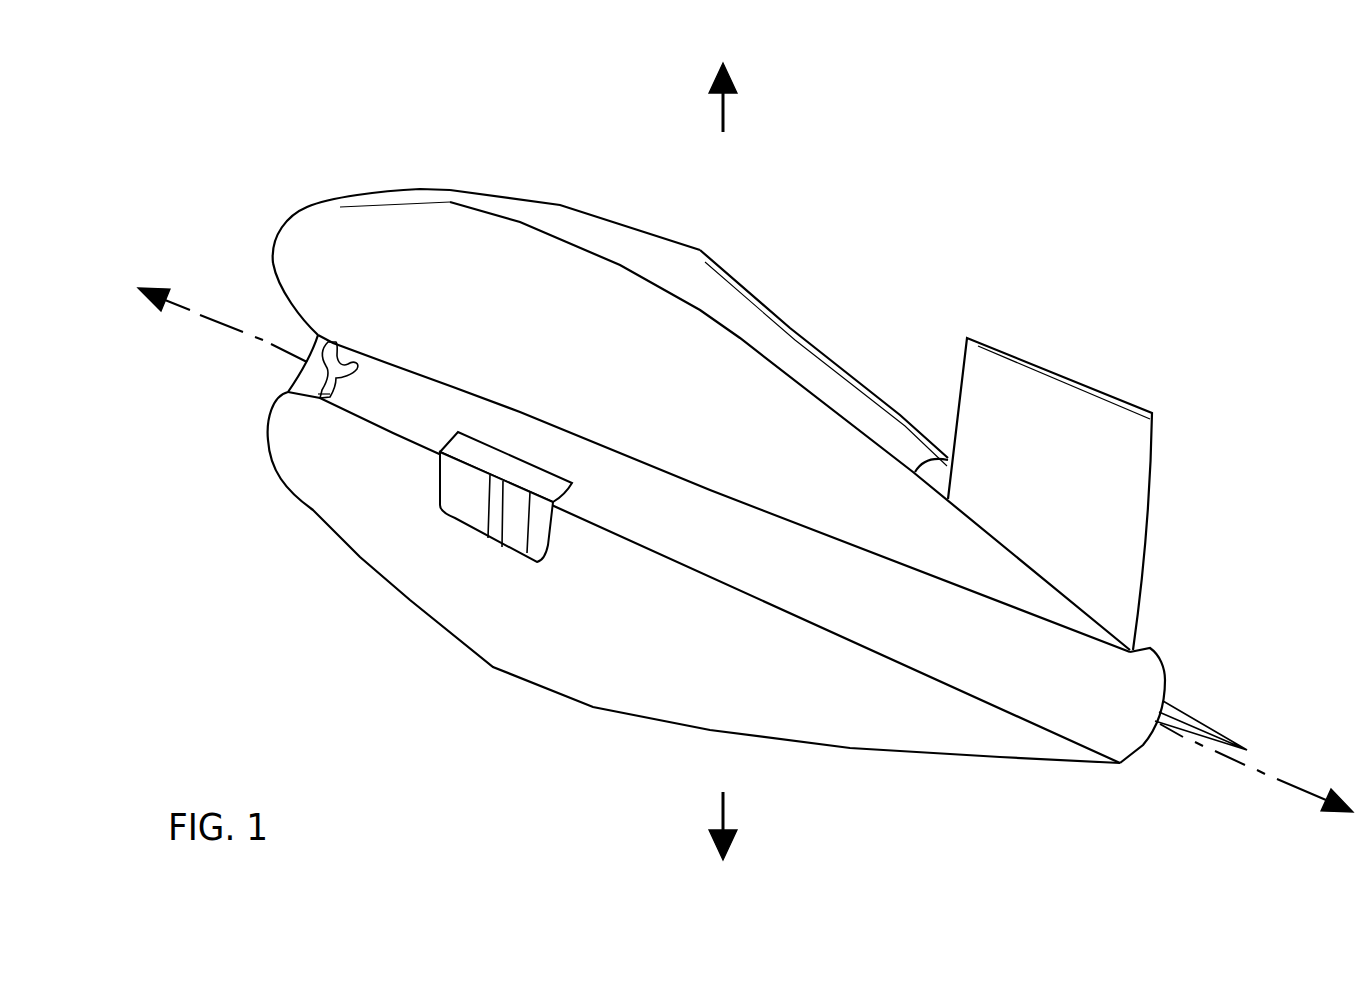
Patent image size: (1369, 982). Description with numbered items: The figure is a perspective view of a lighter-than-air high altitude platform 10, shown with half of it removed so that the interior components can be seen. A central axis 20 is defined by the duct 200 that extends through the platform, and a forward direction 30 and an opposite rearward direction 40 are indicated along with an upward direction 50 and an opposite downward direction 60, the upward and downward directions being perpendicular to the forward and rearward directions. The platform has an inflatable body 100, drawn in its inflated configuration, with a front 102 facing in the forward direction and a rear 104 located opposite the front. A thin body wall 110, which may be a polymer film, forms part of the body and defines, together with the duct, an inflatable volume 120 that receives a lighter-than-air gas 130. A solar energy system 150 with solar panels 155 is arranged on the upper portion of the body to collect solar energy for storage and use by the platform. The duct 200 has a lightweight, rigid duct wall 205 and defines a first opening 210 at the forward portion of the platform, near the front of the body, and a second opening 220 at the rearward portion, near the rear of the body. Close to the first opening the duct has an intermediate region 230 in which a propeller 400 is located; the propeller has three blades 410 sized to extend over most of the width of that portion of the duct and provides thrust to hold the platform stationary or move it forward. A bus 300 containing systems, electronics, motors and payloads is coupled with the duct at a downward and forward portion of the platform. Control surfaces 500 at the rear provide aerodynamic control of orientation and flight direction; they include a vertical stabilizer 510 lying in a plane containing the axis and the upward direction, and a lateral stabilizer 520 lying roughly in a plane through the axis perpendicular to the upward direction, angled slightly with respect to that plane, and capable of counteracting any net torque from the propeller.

The lighter-than-air high altitude platform 10 is at (1061, 164).
The central axis 20 is at (238, 328).
The forward direction 30 is at (170, 303).
The rearward direction 40 is at (1310, 793).
The upward direction 50 is at (723, 108).
The downward direction 60 is at (724, 822).
The inflatable body 100 is at (599, 208).
The front 102 is at (294, 306).
The rear 104 is at (1236, 699).
The body wall 110 is at (432, 190).
The inflatable volume 120 is at (640, 293).
The lighter-than-air gas 130 is at (683, 317).
The solar energy system 150 is at (753, 315).
The solar panels 155 is at (808, 352).
The duct 200 is at (928, 658).
The duct wall 205 is at (997, 688).
The first opening 210 is at (285, 365).
The second opening 220 is at (1145, 757).
The intermediate region 230 is at (348, 328).
The bus 300 is at (492, 557).
The propeller 400 is at (322, 412).
The blades 410 is at (317, 388).
The control surfaces 500 is at (1053, 491).
The vertical stabilizer 510 is at (1000, 360).
The lateral stabilizer 520 is at (1197, 730).